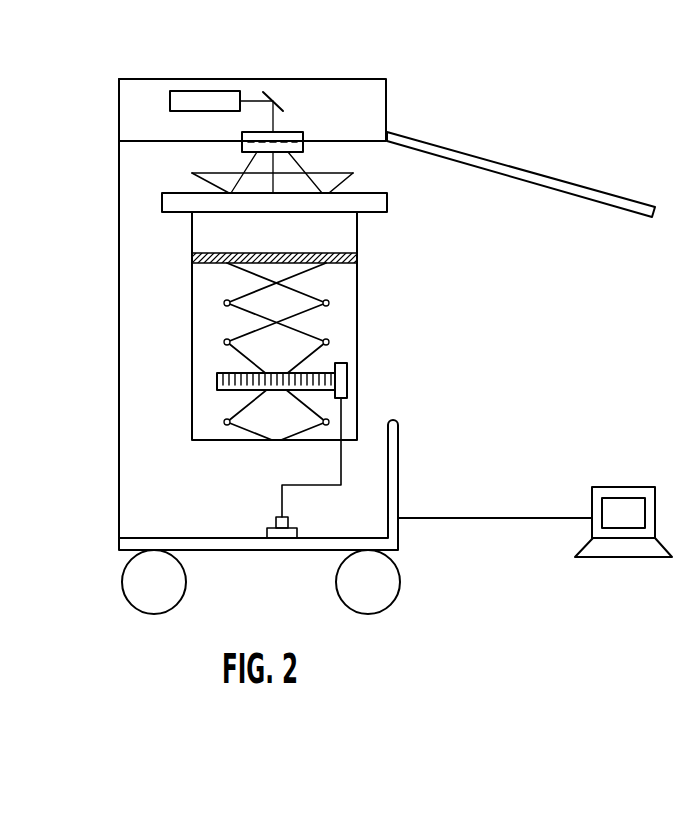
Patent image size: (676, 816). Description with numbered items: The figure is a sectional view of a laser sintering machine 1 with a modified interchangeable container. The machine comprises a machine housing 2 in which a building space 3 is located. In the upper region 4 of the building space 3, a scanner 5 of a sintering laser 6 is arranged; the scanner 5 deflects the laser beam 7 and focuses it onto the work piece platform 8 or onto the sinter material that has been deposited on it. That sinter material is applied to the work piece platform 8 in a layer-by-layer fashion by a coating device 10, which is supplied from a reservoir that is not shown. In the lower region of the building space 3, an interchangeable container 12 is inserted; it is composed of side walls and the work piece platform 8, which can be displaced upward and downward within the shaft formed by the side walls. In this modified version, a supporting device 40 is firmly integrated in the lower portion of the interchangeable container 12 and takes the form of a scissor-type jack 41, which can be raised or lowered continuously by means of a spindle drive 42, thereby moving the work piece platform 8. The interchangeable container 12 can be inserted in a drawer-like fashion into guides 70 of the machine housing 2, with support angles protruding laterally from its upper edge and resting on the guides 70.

The laser sintering machine 1 is at (404, 72).
The machine housing 2 is at (116, 110).
The building space 3 is at (345, 160).
The upper region 4 is at (321, 152).
The scanner 5 is at (293, 131).
The sintering laser 6 is at (206, 91).
The laser beam 7 is at (272, 118).
The work piece platform 8 is at (357, 258).
The coating device 10 is at (336, 184).
The interchangeable container 12 is at (343, 235).
The supporting device 40 is at (286, 351).
The scissor-type jack 41 is at (240, 330).
The spindle drive 42 is at (348, 373).
The guides 70 is at (178, 205).